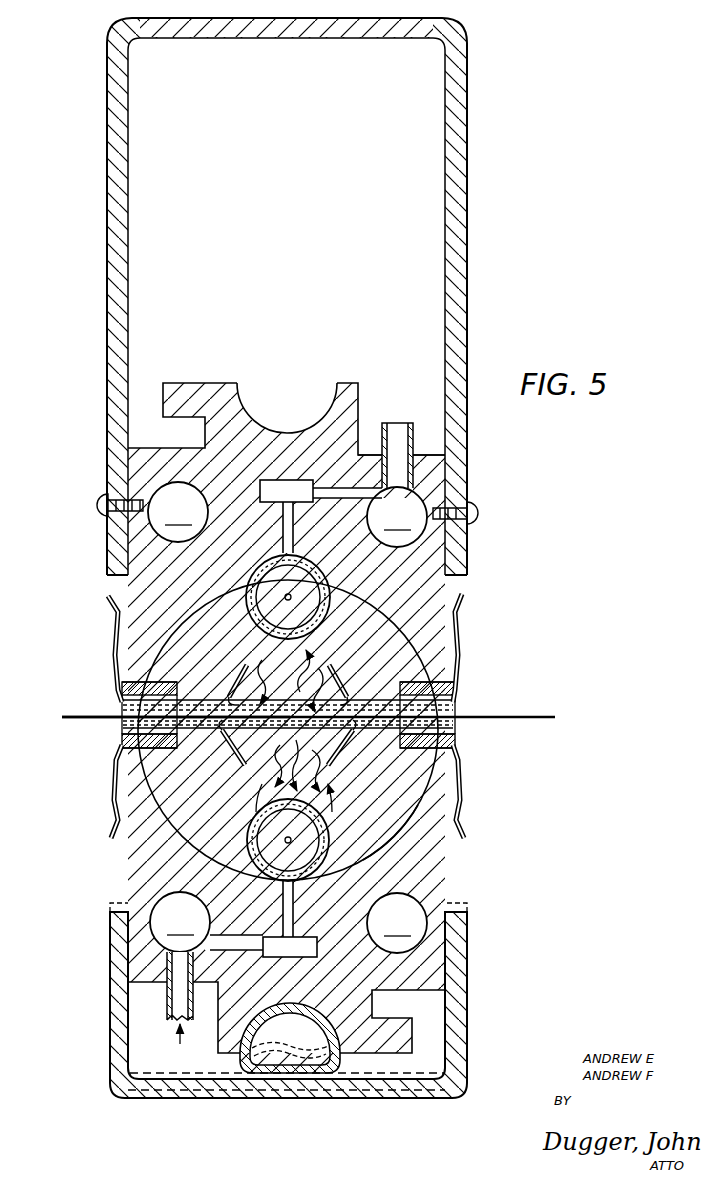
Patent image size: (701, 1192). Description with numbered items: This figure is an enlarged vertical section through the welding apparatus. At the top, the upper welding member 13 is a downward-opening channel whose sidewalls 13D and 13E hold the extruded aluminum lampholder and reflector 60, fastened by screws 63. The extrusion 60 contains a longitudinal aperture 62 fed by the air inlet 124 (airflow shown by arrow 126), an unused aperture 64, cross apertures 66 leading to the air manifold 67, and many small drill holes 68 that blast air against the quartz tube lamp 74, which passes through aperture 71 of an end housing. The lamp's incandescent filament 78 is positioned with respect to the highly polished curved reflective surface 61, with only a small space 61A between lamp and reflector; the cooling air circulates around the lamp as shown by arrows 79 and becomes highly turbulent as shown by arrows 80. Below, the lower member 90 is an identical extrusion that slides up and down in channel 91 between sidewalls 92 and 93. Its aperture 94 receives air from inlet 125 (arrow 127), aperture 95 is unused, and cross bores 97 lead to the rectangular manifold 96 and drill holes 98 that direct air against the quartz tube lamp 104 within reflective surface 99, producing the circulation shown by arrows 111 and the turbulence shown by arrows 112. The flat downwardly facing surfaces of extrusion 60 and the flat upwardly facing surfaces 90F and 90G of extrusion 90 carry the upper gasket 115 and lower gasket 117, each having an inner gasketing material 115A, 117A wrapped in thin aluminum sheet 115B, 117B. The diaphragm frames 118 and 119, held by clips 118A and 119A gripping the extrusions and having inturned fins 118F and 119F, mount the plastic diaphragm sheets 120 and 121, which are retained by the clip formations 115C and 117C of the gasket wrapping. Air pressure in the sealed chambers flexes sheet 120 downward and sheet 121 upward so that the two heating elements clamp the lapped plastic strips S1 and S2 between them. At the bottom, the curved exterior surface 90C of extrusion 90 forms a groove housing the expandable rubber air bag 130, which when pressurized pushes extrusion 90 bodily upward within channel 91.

The upper welding member 13 is at (474, 220).
The sidewall of channel 13D is at (457, 278).
The sidewall of channel 13E is at (125, 262).
The extruded aluminum lampholder and reflector 60 is at (434, 550).
The curved reflective under surface 61 is at (400, 612).
The space between lamp and reflective surface 61A is at (312, 558).
The aperture 62 is at (397, 517).
The screws 63 is at (100, 494).
The aperture 64 is at (178, 512).
The cross apertures 66 is at (333, 492).
The air manifold 67 is at (286, 491).
The drill holes 68 is at (250, 492).
The aperture 71 is at (272, 552).
The quartz tube lamp 74 is at (252, 574).
The incandescent filament 78 is at (289, 595).
The arrows 79 is at (243, 628).
The arrows 80 is at (292, 675).
The lower member 90 is at (128, 862).
The curved exterior surface 90C is at (312, 1004).
The flat upwardly facing surface 90F is at (150, 746).
The flat upwardly facing surface 90G is at (455, 752).
The channel 91 is at (375, 1082).
The sidewall of channel 92 is at (455, 936).
The sidewall of channel 93 is at (112, 957).
The aperture 94 is at (180, 922).
The aperture 95 is at (397, 923).
The rectangular manifold 96 is at (290, 947).
The cross bores 97 is at (215, 992).
The apertures 98 is at (295, 900).
The reflective surface 99 is at (355, 840).
The quartz tube lamp 104 is at (302, 808).
The arrows 111 is at (332, 830).
The arrows 112 is at (301, 763).
The upper gasket 115 is at (160, 684).
The inner gasketing material 115A is at (147, 698).
The aluminum sheet 115B is at (150, 690).
The clip formation 115C is at (125, 707).
The lower gasket 117 is at (173, 753).
The inner gasket material 117A is at (162, 776).
The aluminum sheet 117B is at (165, 762).
The clip formation 117C is at (125, 723).
The diaphragm frame 118 is at (120, 690).
The clips 118A is at (110, 603).
The inturned fins 118F is at (243, 666).
The diaphragm frame 119 is at (118, 740).
The clips 119A is at (115, 790).
The inturned fins 119F is at (232, 776).
The plastic diaphragm sheet 120 is at (178, 706).
The plastic diaphragm sheet 121 is at (172, 732).
The air inlet 124 is at (378, 440).
The air inlet 125 is at (168, 990).
The arrow 126 is at (400, 417).
The arrow 127 is at (176, 1046).
The air bag 130 is at (300, 1076).
The plastic strip S1 is at (535, 717).
The plastic strip S2 is at (85, 716).